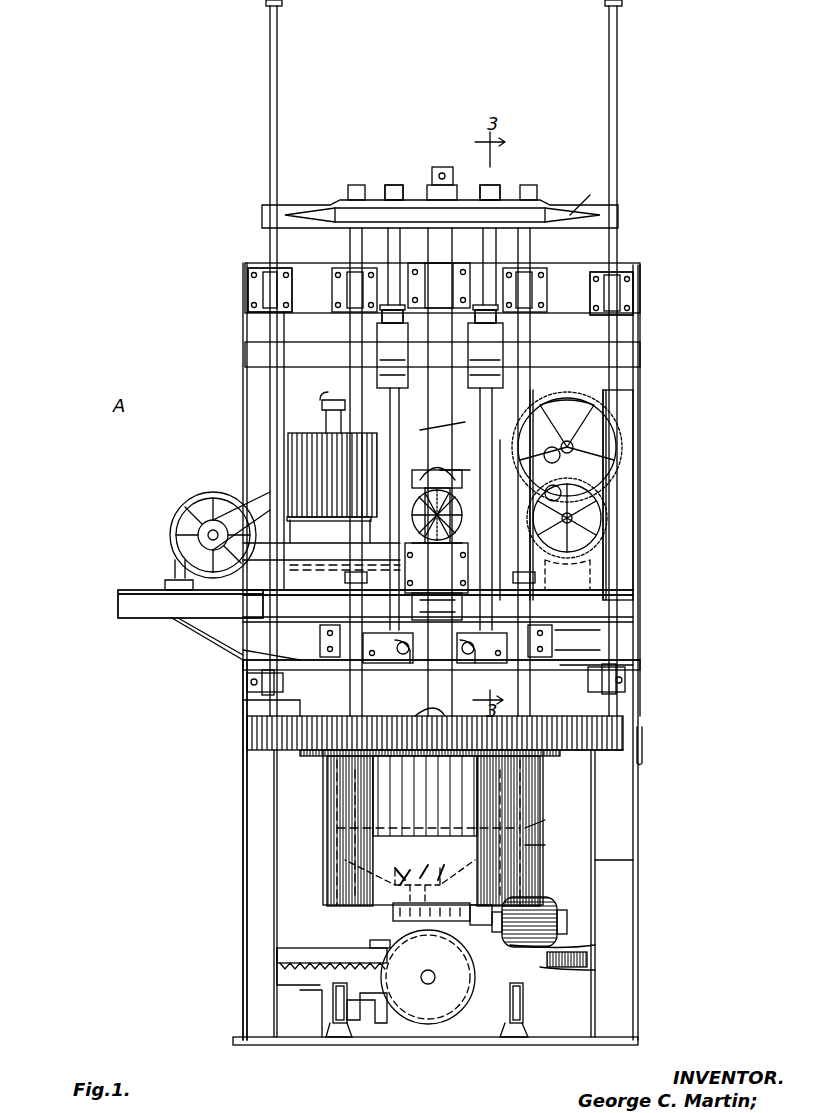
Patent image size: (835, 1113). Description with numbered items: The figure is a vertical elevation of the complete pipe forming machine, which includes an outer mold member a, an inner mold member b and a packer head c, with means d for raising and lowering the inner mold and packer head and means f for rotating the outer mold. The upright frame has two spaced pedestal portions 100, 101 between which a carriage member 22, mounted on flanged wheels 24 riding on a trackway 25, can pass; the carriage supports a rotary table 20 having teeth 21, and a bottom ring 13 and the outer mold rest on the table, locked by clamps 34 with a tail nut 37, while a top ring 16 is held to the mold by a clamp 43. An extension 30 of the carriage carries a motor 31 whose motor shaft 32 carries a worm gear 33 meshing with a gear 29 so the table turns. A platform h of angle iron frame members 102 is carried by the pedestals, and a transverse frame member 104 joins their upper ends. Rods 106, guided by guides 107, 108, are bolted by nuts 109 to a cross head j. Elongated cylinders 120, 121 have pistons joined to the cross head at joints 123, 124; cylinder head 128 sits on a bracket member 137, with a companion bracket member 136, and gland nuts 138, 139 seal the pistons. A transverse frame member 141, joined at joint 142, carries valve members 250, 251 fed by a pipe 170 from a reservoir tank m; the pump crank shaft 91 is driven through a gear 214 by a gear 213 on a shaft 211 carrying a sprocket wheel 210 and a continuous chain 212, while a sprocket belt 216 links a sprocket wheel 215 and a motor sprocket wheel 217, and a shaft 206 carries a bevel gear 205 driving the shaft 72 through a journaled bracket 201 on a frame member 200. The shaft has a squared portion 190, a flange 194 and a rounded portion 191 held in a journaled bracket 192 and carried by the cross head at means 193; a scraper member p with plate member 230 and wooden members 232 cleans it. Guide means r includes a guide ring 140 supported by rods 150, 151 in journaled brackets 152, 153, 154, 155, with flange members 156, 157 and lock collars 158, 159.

The flange member 157 is at (283, 5).
The flange member 156 is at (622, 5).
The nuts 109 is at (355, 185).
The piston joint 124 is at (398, 185).
The piston joint 123 is at (500, 185).
The shaft carrying means 193 is at (445, 167).
The cross head j is at (565, 213).
The guides 108 is at (340, 270).
The journaled bracket 155 is at (262, 290).
The journaled bracket 154 is at (628, 296).
The transverse frame member 104 is at (567, 280).
The valve member 251 is at (490, 343).
The valve member 250 is at (403, 327).
The gland nut 139 is at (395, 275).
The gland nut 138 is at (490, 290).
The journaled bracket 192 is at (452, 275).
The frame joint 142 is at (625, 355).
The transverse frame member 141 is at (545, 356).
The raising and lowering means d is at (420, 430).
The crank shaft 91 is at (440, 480).
The pipe 170 is at (333, 400).
The reservoir tank m is at (300, 435).
The elongated cylinder 121 is at (433, 487).
The rounded portion of shaft 191 is at (440, 470).
The flange 194 is at (445, 478).
The elongated cylinder 120 is at (500, 440).
The bevel gear 205 is at (470, 540).
The gear 214 is at (595, 440).
The continuous chain 212 is at (580, 470).
The shaft 211 is at (590, 495).
The gear 213 is at (588, 505).
The sprocket wheel 210 is at (603, 520).
The shaft 206 is at (400, 497).
The sprocket wheel 215 is at (272, 490).
The sprocket belt 216 is at (178, 512).
The sprocket wheel 217 is at (208, 535).
The frame member 200 is at (618, 572).
The angle iron frame members 102 is at (130, 600).
The platform h is at (128, 606).
The journaled bracket 201 is at (340, 582).
The plate member 230 is at (330, 604).
The wooden members 232 is at (300, 612).
The scraper member p is at (250, 652).
The guides 107 is at (393, 663).
The cylinder head 128 is at (320, 640).
The lock collar 158 is at (283, 678).
The bracket member 137 is at (400, 665).
The bracket member 136 is at (470, 665).
The rods 106 is at (345, 696).
The rod 150 is at (575, 645).
The lock collar 159 is at (605, 668).
The journaled bracket 152 is at (625, 683).
The journaled bracket 153 is at (247, 684).
The rod 151 is at (265, 701).
The guide ring 140 is at (247, 735).
The squared portion of shaft 190 is at (418, 714).
The shaft 72 is at (442, 716).
The guide means r is at (643, 735).
The top ring 16 is at (565, 752).
The clamp 43 is at (320, 767).
The pedestal portion 101 is at (243, 845).
The inner mold member b is at (540, 828).
The outer mold member a is at (540, 850).
The pedestal portion 100 is at (625, 860).
The packer head c is at (395, 870).
The outer mold rotating means f is at (560, 895).
The motor 31 is at (500, 910).
The motor shaft 32 is at (565, 950).
The teeth 21 is at (590, 960).
The extension 30 is at (590, 975).
The clamps 34 is at (393, 912).
The tail nut 37 is at (370, 944).
The worm gear 33 is at (290, 962).
The rotary table 20 is at (300, 965).
The bottom ring 13 is at (305, 975).
The flanged wheels 24 is at (335, 1005).
The carriage member 22 is at (365, 1022).
The trackway 25 is at (340, 1037).
The gear 29 is at (435, 1024).